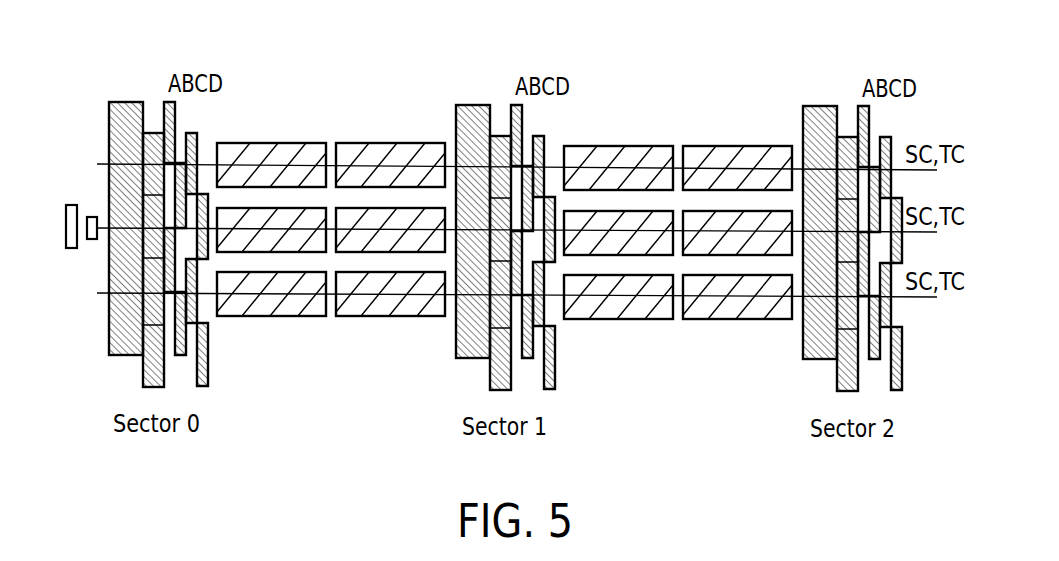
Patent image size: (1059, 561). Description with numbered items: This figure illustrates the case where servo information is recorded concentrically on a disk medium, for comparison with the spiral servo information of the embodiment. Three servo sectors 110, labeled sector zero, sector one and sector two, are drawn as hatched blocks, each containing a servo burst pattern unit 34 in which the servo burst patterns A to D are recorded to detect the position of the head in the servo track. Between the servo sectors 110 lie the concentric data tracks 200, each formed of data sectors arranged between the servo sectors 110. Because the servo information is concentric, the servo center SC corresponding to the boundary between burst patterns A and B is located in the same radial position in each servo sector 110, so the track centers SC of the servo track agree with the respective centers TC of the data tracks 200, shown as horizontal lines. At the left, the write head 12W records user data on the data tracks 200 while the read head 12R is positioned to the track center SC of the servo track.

The servo sector 110 is at (150, 104).
The servo burst pattern unit 34 is at (195, 122).
The data track 200 is at (338, 125).
The write head 12W is at (73, 205).
The read head 12R is at (90, 239).